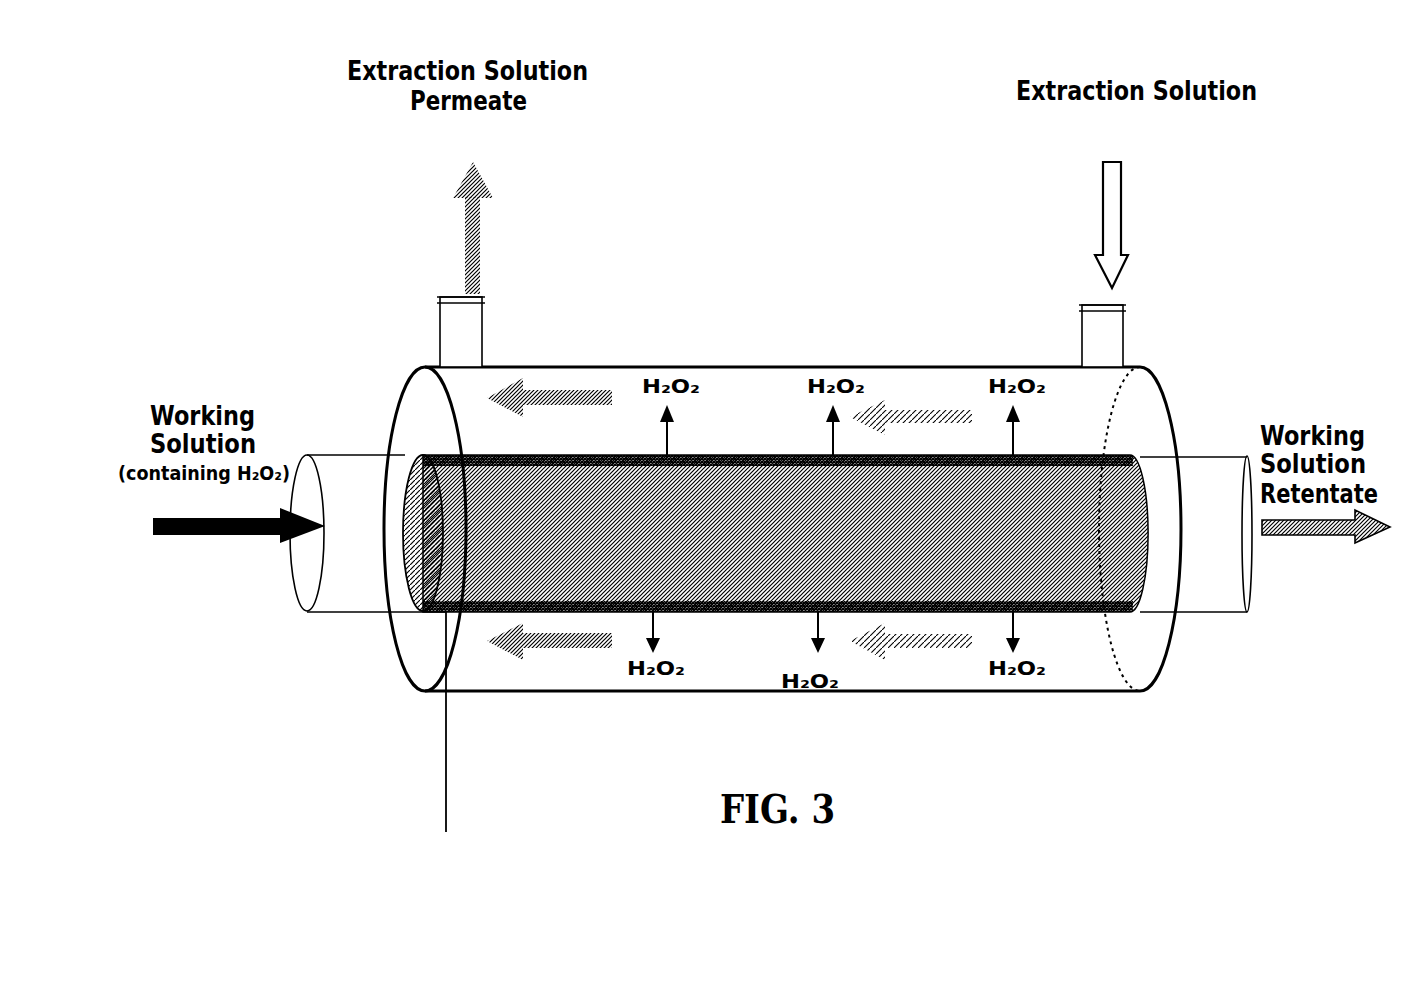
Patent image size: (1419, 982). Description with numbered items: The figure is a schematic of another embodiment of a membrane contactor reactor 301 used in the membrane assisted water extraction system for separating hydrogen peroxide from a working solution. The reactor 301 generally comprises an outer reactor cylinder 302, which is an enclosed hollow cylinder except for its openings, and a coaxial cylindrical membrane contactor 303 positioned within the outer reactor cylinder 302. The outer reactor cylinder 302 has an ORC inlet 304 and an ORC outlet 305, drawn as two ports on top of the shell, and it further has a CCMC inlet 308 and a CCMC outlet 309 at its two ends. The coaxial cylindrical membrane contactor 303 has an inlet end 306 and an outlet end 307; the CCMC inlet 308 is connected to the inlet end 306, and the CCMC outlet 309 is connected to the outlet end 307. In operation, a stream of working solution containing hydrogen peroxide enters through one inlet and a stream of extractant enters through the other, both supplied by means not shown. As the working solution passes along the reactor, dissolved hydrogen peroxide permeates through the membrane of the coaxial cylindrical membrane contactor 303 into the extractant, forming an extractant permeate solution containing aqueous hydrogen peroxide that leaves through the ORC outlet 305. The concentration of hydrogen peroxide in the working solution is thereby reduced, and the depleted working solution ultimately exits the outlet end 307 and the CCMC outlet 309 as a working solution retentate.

The membrane contactor reactor 301 is at (849, 436).
The outer reactor cylinder 302 is at (670, 366).
The coaxial cylindrical membrane contactor 303 is at (720, 612).
The ORC inlet 304 is at (1123, 342).
The ORC outlet 305 is at (508, 298).
The inlet end 306 is at (440, 742).
The outlet end 307 is at (1137, 608).
The CCMC inlet 308 is at (362, 608).
The CCMC outlet 309 is at (1250, 613).